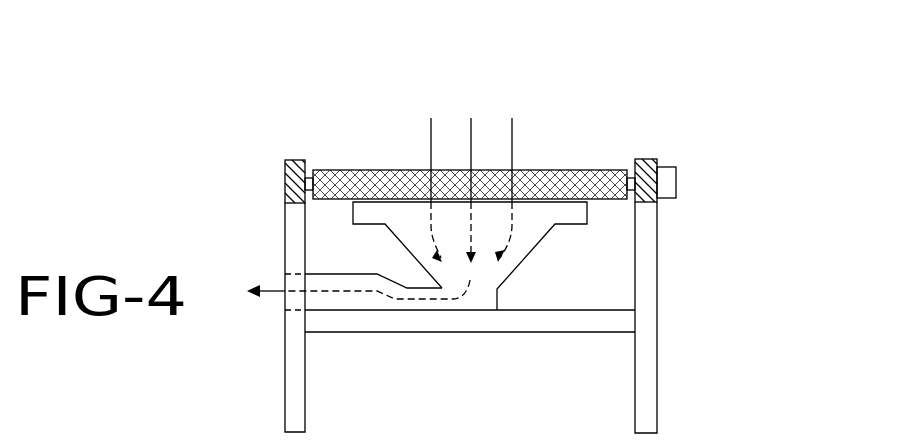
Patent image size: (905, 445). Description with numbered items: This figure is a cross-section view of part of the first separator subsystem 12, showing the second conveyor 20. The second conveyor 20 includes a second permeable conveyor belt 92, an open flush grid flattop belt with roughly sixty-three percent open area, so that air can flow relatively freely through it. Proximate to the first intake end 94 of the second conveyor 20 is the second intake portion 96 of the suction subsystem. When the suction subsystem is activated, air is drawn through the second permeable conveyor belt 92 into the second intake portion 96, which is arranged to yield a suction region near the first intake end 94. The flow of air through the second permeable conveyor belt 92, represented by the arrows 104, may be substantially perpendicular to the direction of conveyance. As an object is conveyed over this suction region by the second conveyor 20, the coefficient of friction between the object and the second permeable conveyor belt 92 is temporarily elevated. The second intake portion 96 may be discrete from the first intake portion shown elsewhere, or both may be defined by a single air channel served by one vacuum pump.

The first separator subsystem 12 is at (738, 123).
The second conveyor 20 is at (603, 200).
The second permeable conveyor belt 92 is at (608, 182).
The first intake end 94 is at (347, 183).
The second intake portion 96 is at (558, 200).
The arrows 104 is at (429, 147).